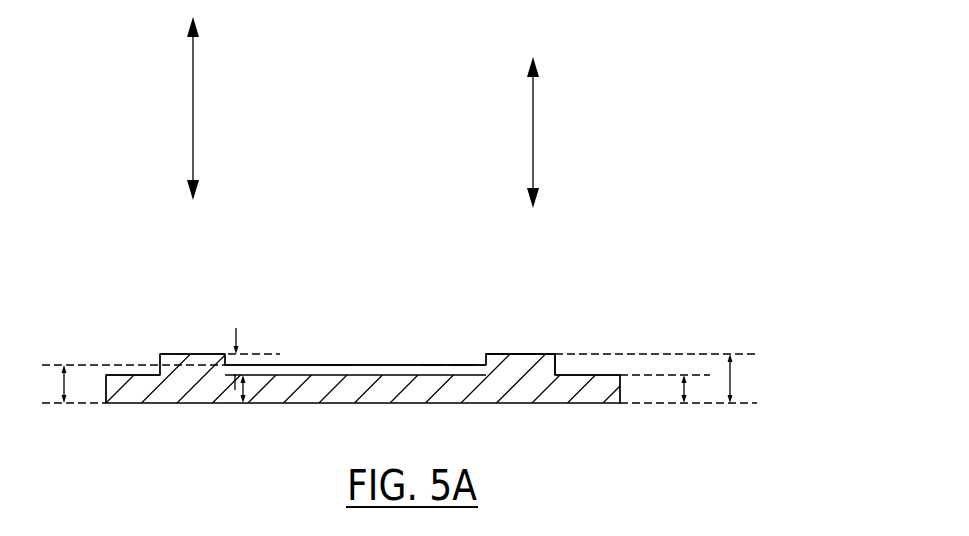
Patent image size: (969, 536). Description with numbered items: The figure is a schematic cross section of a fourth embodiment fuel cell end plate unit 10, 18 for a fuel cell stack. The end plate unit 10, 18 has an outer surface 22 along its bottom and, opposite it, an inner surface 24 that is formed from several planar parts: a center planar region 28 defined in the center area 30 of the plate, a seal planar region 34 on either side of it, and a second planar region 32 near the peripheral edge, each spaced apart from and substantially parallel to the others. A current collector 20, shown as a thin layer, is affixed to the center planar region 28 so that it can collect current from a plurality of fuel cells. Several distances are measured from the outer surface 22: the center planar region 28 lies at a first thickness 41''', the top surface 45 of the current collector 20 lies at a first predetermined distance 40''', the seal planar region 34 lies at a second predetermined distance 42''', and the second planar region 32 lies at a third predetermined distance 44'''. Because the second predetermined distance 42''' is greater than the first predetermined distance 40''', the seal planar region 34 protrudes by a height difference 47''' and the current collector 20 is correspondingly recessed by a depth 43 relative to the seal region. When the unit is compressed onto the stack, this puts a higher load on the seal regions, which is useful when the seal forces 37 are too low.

The fuel cell end plate unit 10 is at (523, 316).
The fuel cell end plate unit 18 is at (518, 353).
The current collector 20 is at (393, 364).
The outer surface 22 is at (524, 404).
The inner surface 24 is at (107, 374).
The center planar region 28 is at (463, 364).
The center area 30 is at (372, 286).
The second planar region 32 is at (148, 374).
The seal planar region 34 is at (220, 353).
The seal forces 37 is at (195, 107).
The first predetermined distance 40''' is at (100, 398).
The first thickness 41''' is at (277, 403).
The second predetermined distance 42''' is at (766, 380).
The recess depth 43 is at (336, 360).
The third predetermined distance 44''' is at (721, 403).
The top surface of the current collector 45 is at (433, 364).
The height difference 47''' is at (268, 334).